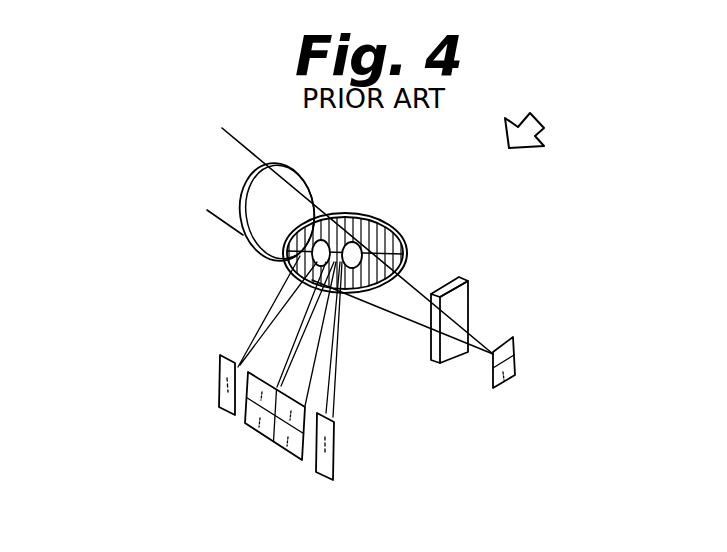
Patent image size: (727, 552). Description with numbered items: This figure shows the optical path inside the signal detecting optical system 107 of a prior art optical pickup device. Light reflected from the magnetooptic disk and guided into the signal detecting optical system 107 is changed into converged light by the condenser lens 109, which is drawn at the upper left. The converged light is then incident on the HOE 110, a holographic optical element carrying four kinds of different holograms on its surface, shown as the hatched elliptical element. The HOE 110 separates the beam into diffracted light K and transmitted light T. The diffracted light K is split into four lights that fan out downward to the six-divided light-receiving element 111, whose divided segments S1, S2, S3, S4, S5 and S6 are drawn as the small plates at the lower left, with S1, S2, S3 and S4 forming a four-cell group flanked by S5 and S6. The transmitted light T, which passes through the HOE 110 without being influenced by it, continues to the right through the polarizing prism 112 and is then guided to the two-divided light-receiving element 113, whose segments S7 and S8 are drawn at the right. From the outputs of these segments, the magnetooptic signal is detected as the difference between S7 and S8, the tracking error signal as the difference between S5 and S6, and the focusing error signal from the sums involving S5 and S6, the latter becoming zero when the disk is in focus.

The signal detecting optical system 107 is at (534, 116).
The condenser lens 109 is at (288, 174).
The HOE (Holographic Optical Element) 110 is at (381, 219).
The six-divided light-receiving element 111 is at (220, 417).
The polarizing prism 112 is at (470, 297).
The two-divided light-receiving element 113 is at (533, 368).
The diffracted light K is at (290, 297).
The transmitted light T is at (402, 320).
The light-receiving segment S1 is at (264, 376).
The light-receiving segment S2 is at (290, 395).
The light-receiving segment S3 is at (252, 440).
The light-receiving segment S4 is at (282, 459).
The light-receiving segment S5 is at (208, 385).
The light-receiving segment S6 is at (345, 446).
The light-receiving segment S7 is at (501, 341).
The light-receiving segment S8 is at (502, 396).